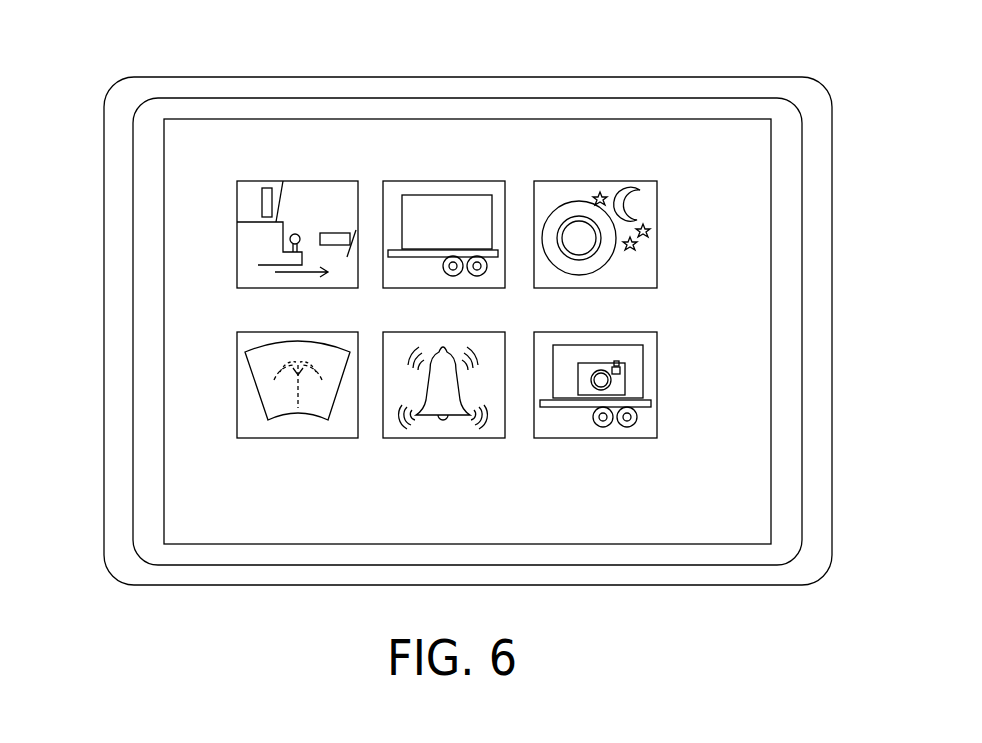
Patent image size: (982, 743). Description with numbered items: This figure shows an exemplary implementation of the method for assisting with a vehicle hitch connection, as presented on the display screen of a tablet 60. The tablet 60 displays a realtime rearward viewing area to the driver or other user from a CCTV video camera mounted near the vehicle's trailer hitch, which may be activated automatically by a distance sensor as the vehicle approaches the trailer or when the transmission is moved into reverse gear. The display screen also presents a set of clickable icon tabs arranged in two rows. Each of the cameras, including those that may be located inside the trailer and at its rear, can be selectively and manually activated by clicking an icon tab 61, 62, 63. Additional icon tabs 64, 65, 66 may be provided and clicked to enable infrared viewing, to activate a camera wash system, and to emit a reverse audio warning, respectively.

The tablet 60 is at (103, 170).
The icon tab 61 is at (262, 181).
The icon tab 62 is at (659, 358).
The icon tab 63 is at (423, 181).
The icon tab 64 is at (626, 181).
The icon tab 65 is at (243, 438).
The icon tab 66 is at (506, 434).